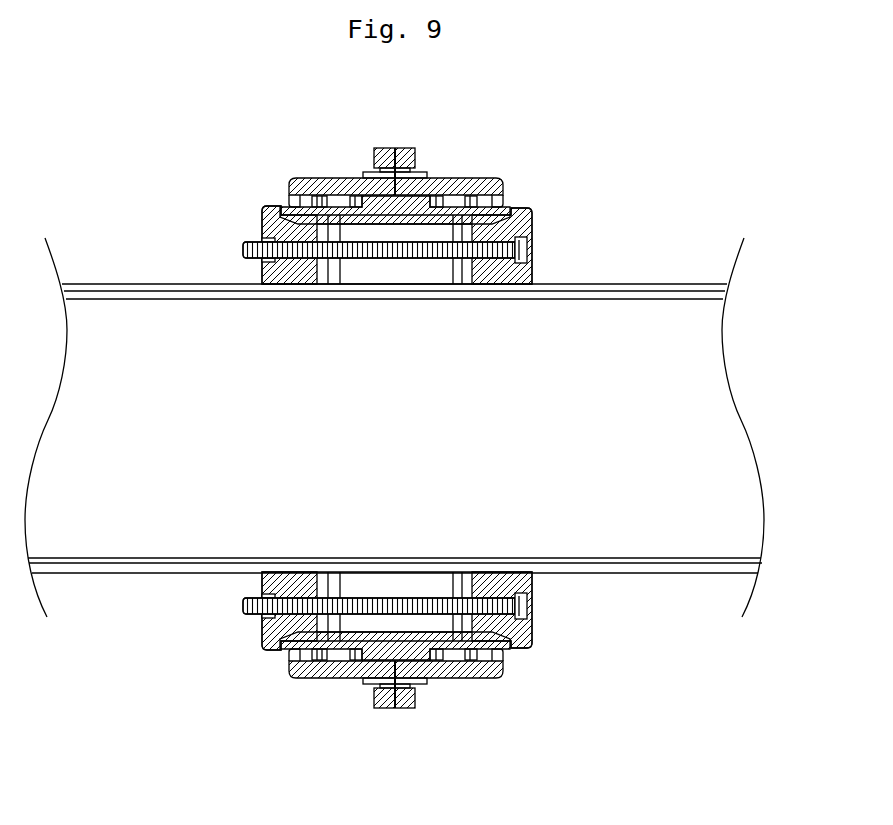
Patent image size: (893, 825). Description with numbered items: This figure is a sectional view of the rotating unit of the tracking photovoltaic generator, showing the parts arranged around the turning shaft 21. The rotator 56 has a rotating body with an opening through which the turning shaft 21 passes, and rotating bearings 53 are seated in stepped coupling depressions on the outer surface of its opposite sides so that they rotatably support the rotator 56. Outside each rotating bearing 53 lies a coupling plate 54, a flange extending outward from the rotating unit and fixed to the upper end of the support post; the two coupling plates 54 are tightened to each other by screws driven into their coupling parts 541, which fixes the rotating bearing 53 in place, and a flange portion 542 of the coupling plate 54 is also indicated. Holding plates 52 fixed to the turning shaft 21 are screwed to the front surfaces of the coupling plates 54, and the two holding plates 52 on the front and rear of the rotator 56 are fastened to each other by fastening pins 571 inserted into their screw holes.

The turning shaft 21 is at (117, 575).
The holding plate 52 is at (262, 634).
The rotating bearing 53 is at (328, 181).
The coupling plate 54 is at (336, 200).
The coupling part 541 is at (407, 148).
The cover flange 542 is at (485, 178).
The rotator 56 is at (264, 224).
The fastening pin 571 is at (242, 606).